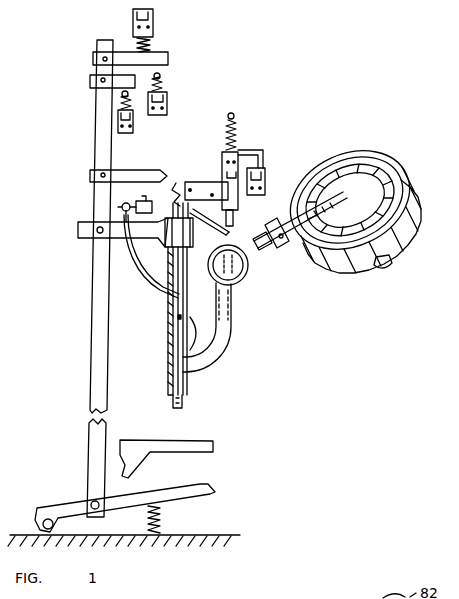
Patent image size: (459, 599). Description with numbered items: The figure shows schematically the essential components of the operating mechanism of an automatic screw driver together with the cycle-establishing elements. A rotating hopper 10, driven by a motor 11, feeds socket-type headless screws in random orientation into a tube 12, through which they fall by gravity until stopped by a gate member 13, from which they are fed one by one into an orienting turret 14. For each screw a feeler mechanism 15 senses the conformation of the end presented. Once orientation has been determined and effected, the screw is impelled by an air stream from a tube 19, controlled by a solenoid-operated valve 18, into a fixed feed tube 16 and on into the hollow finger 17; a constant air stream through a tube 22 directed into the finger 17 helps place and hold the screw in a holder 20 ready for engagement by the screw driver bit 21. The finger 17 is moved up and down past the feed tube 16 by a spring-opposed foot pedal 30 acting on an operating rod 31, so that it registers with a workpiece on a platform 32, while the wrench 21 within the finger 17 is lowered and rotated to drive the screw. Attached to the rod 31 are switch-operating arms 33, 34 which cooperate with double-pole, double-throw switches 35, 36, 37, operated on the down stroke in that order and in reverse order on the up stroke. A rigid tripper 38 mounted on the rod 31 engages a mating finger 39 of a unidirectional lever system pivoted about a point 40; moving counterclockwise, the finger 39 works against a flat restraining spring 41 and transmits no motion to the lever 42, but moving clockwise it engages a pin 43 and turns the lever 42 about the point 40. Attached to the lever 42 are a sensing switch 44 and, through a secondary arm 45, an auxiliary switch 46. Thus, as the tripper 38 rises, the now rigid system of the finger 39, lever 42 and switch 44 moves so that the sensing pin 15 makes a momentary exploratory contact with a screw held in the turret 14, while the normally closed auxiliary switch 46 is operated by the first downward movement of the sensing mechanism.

The rotating hopper 10 is at (412, 198).
The motor 11 is at (390, 240).
The tube 12 is at (293, 240).
The gate member 13 is at (267, 228).
The orienting turret 14 is at (245, 267).
The feeler mechanism 15 is at (237, 218).
The tube 16 is at (233, 302).
The hollow finger 17 is at (172, 338).
The solenoid-operated valve 18 is at (142, 200).
The tube 19 is at (235, 240).
The holder 20 is at (172, 397).
The screw driver bit 21 is at (178, 275).
The tube 22 is at (157, 292).
The foot pedal 30 is at (218, 487).
The operating rod 31 is at (93, 353).
The platform 32 is at (214, 446).
The switch-operating arm 33 is at (95, 58).
The switch-operating arm 34 is at (92, 80).
The switch 35 is at (153, 32).
The switch 36 is at (167, 107).
The switch 37 is at (133, 127).
The tripper 38 is at (157, 170).
The mating finger 39 is at (179, 188).
The pivot point 40 is at (190, 219).
The flat restraining spring 41 is at (194, 183).
The lever 42 is at (212, 193).
The pin 43 is at (193, 228).
The sensing switch 44 is at (232, 162).
The secondary arm 45 is at (263, 150).
The auxiliary switch 46 is at (263, 180).